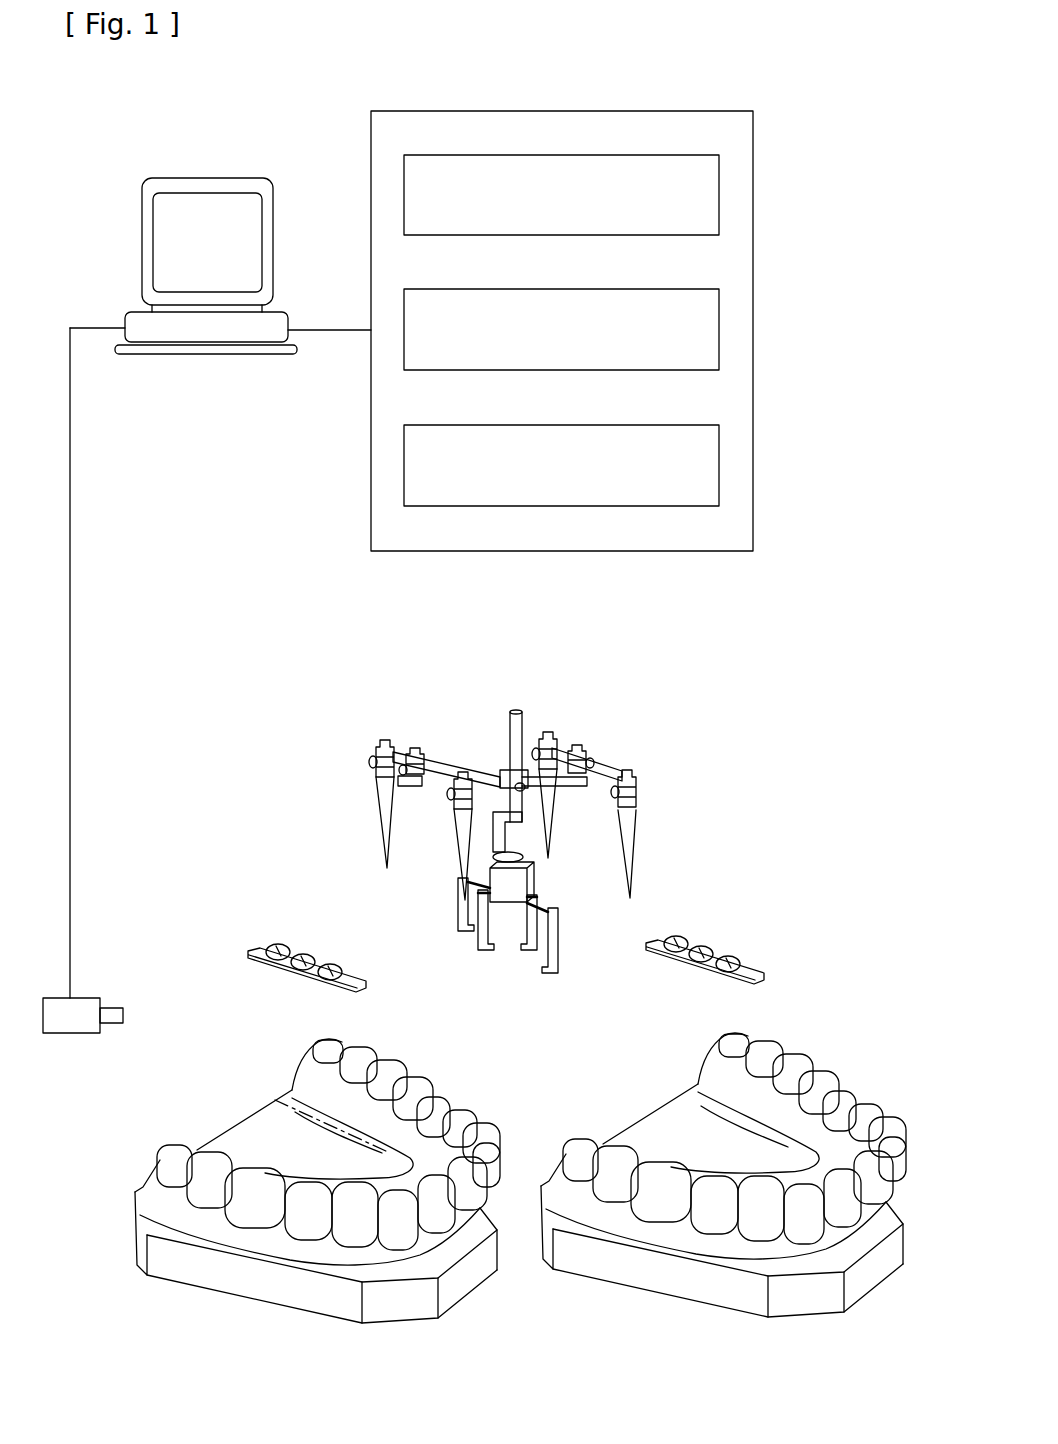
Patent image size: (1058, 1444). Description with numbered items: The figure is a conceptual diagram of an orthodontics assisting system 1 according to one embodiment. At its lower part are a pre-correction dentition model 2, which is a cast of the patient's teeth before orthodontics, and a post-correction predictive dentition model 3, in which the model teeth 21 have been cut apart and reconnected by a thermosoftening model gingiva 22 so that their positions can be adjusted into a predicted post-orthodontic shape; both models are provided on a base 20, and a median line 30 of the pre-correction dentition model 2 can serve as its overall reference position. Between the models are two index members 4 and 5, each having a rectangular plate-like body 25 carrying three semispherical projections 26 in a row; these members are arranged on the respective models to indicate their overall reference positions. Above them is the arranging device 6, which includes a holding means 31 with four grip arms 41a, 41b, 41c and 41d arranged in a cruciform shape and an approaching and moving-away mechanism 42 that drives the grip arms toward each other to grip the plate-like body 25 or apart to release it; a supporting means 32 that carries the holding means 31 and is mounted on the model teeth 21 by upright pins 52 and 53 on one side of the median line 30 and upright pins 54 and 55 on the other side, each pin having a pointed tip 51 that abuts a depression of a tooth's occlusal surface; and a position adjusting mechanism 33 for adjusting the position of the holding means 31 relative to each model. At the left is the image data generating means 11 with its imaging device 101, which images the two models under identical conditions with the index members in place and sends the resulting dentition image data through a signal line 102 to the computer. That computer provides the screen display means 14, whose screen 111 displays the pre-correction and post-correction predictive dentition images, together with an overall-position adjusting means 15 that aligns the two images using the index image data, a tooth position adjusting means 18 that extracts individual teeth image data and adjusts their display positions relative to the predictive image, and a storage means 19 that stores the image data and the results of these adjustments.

The orthodontics assisting system 1 is at (140, 158).
The screen display means 14 is at (145, 216).
The screen 111 is at (163, 257).
The overall-position adjusting means 15 is at (570, 155).
The tooth position adjusting means 18 is at (570, 289).
The storage means 19 is at (570, 425).
The signal line 102 is at (72, 700).
The image data generating means 11 is at (106, 993).
The imaging device 101 is at (122, 1015).
The arranging device 6 is at (372, 732).
The position adjusting mechanism 33 is at (590, 746).
The supporting means 32 is at (372, 818).
The upright pin 53 is at (382, 835).
The tip 51 is at (386, 870).
The upright pin 52 is at (458, 852).
The upright pin 55 is at (552, 822).
The upright pin 54 is at (634, 840).
The approaching and moving-away mechanism 42 is at (540, 882).
The holding means 31 is at (557, 975).
The grip arm 41a is at (485, 950).
The grip arm 41b is at (533, 952).
The grip arm 41c is at (560, 948).
The grip arm 41d is at (458, 905).
The index member 4 is at (245, 945).
The index member 5 is at (725, 950).
The plate-like body 25 is at (288, 975).
The projection 26 is at (299, 954).
The pre-correction dentition model 2 is at (150, 1156).
The post-correction predictive dentition model 3 is at (833, 1062).
The median line 30 is at (275, 1100).
The model gingiva 22 is at (678, 1233).
The base 20 is at (283, 1295).
The model tooth 21 is at (250, 1182).